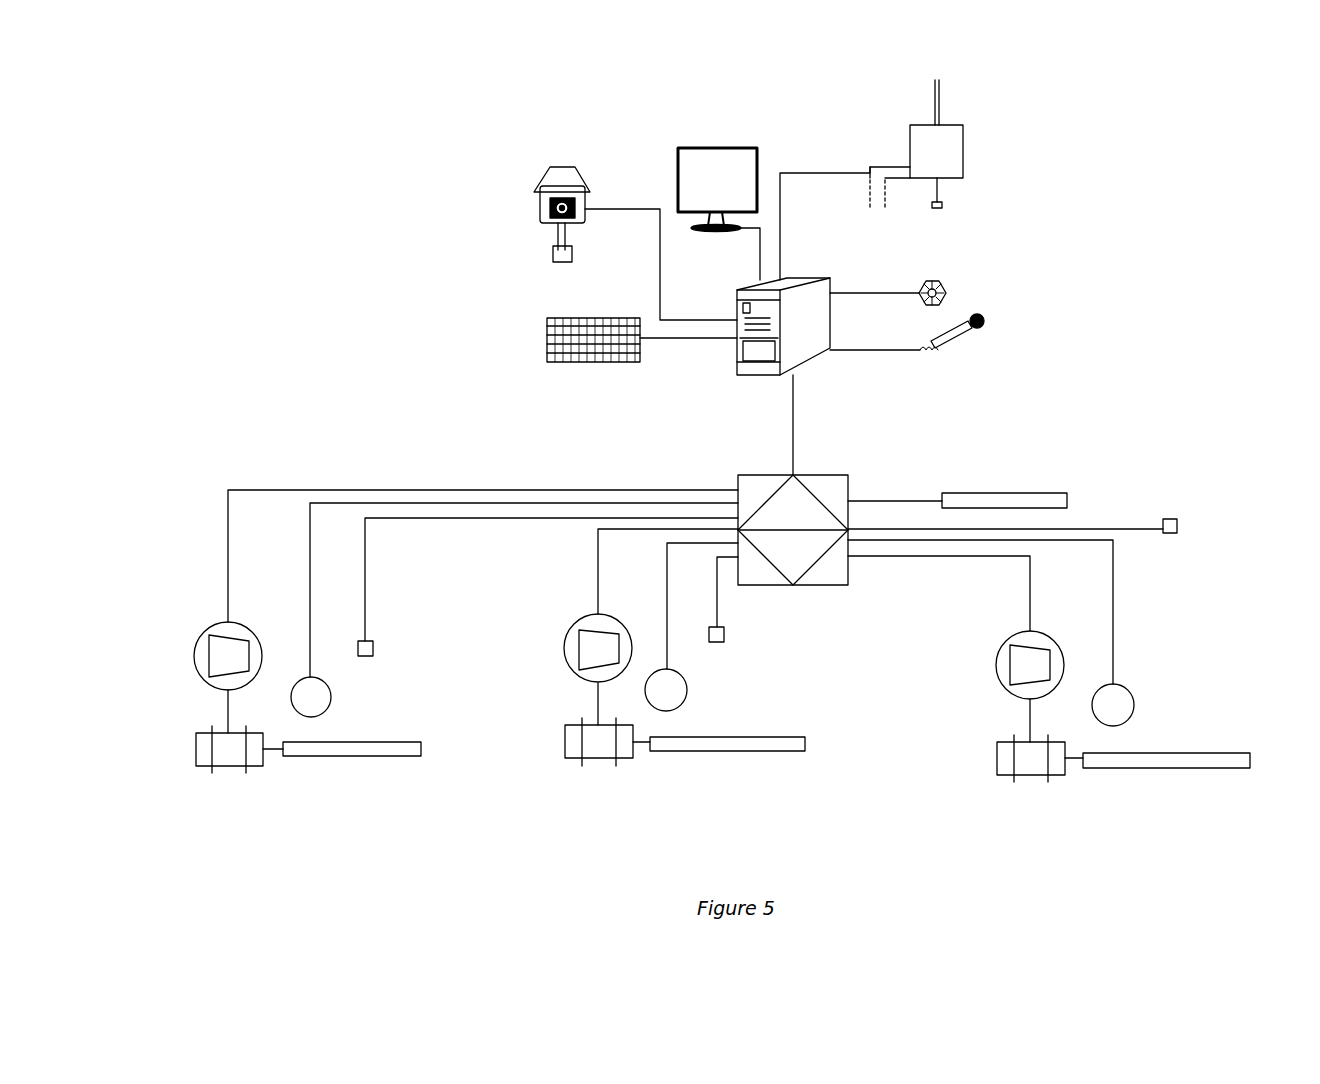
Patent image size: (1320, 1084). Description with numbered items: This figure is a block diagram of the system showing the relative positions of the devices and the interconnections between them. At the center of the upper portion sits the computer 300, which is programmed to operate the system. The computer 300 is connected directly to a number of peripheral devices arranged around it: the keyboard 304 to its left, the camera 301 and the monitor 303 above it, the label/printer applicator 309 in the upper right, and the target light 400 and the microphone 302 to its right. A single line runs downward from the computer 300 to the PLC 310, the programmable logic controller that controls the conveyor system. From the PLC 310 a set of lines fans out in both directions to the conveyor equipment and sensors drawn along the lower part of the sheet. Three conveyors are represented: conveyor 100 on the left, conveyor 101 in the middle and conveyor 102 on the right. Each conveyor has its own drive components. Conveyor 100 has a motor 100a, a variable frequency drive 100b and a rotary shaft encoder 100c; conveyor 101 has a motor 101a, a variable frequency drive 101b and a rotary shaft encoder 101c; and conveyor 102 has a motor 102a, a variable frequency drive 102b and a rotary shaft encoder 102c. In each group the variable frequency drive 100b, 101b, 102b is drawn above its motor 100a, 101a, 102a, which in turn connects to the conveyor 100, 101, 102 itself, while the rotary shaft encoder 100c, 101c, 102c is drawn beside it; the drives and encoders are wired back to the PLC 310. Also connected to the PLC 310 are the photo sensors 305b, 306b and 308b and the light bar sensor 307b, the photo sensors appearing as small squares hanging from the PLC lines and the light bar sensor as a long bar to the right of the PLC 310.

The computer 300 is at (738, 382).
The camera 301 is at (585, 165).
The microphone 302 is at (955, 340).
The monitor 303 is at (762, 170).
The keyboard 304 is at (545, 339).
The label/printer applicator 309 is at (965, 155).
The PLC 310 is at (830, 475).
The target light 400 is at (948, 283).
The photo sensor 305b is at (372, 643).
The photo sensor 306b is at (727, 635).
The light bar sensor 307b is at (1037, 493).
The photo sensor 308b is at (1178, 535).
The conveyor 100 is at (340, 758).
The motor 100a is at (228, 772).
The variable frequency drive 100b is at (200, 680).
The rotary shaft encoder 100c is at (332, 697).
The conveyor 101 is at (768, 752).
The motor 101a is at (598, 762).
The variable frequency drive 101b is at (570, 657).
The rotary shaft encoder 101c is at (688, 690).
The conveyor 102 is at (1240, 770).
The motor 102a is at (1005, 778).
The variable frequency drive 102b is at (1003, 688).
The rotary shaft encoder 102c is at (1135, 706).